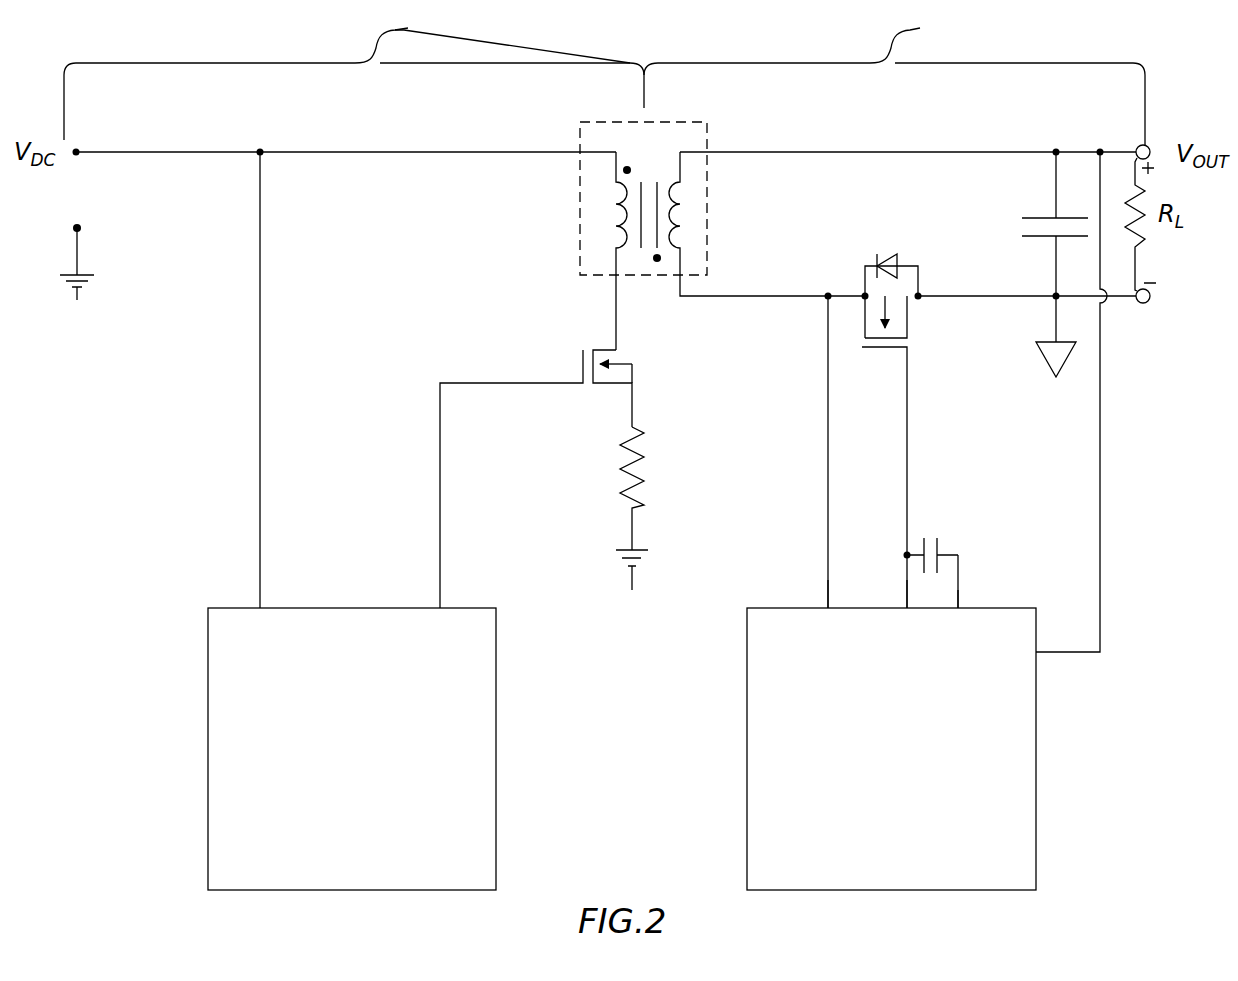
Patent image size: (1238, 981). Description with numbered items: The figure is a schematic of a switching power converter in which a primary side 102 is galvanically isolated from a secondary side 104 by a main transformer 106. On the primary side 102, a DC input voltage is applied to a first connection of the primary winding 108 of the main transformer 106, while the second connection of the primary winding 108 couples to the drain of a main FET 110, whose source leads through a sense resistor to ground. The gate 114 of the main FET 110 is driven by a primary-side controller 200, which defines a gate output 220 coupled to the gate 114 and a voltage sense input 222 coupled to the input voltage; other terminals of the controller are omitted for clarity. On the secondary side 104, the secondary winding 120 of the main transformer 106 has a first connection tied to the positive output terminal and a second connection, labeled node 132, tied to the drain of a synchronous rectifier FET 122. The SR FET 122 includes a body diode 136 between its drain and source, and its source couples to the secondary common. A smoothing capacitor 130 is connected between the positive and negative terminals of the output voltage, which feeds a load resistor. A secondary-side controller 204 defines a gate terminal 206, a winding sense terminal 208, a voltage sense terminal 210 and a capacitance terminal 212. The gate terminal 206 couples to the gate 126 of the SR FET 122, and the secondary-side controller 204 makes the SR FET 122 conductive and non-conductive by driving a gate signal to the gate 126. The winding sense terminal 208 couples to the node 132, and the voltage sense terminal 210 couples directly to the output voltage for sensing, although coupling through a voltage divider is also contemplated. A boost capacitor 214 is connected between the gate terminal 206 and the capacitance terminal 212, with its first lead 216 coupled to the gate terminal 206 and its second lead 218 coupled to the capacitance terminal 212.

The primary side 102 is at (354, 77).
The secondary side 104 is at (894, 80).
The main transformer 106 is at (681, 233).
The primary winding 108 is at (616, 216).
The main FET 110 is at (588, 468).
The gate 114 is at (583, 380).
The secondary winding 120 is at (684, 240).
The synchronous rectifier FET 122 is at (907, 388).
The gate 126 is at (907, 348).
The smoothing capacitor 130 is at (1055, 217).
The node 132 is at (827, 299).
The body diode 136 is at (898, 266).
The primary-side controller 200 is at (323, 776).
The secondary-side controller 204 is at (869, 776).
The gate terminal 206 is at (906, 607).
The winding sense terminal 208 is at (827, 607).
The voltage sense terminal 210 is at (1037, 654).
The capacitance terminal 212 is at (959, 607).
The boost capacitor 214 is at (942, 536).
The first lead 216 is at (909, 552).
The second lead 218 is at (958, 580).
The gate output 220 is at (444, 605).
The voltage sense input 222 is at (262, 606).